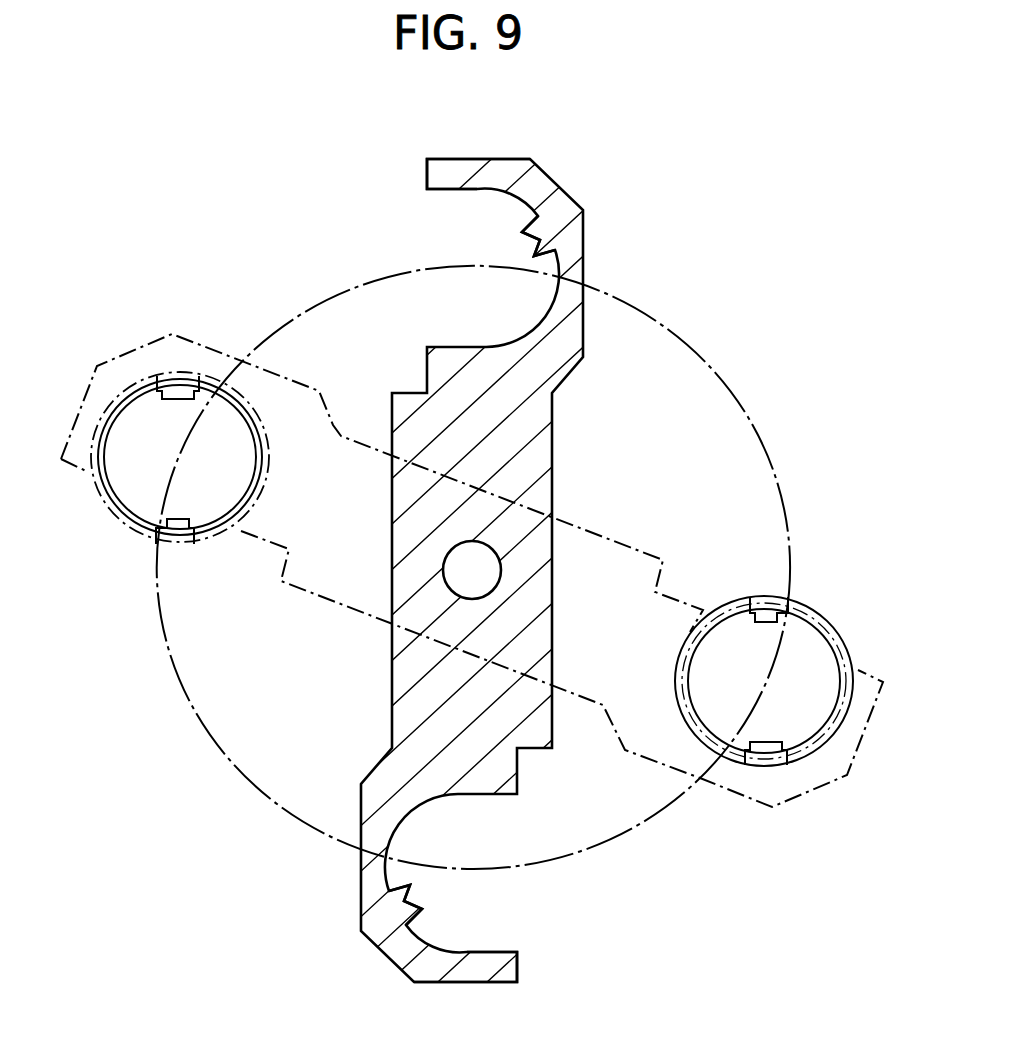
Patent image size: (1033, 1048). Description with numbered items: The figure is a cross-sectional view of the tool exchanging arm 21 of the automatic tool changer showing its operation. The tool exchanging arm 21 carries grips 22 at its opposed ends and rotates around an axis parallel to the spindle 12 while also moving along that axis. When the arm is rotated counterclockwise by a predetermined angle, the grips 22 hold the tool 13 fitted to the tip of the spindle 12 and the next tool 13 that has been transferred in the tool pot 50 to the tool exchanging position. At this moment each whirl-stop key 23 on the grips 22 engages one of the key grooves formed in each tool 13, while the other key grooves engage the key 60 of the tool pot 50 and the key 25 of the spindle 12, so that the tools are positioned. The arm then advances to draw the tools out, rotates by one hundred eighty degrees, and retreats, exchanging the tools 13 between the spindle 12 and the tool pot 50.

The spindle 12 is at (837, 637).
The tool 13 is at (832, 663).
The tool exchanging arm 21 is at (537, 418).
The grip 22 is at (440, 160).
The whirl-stop key 23 is at (540, 238).
The key 25 is at (763, 608).
The tool pot 50 is at (115, 515).
The key 60 is at (177, 532).